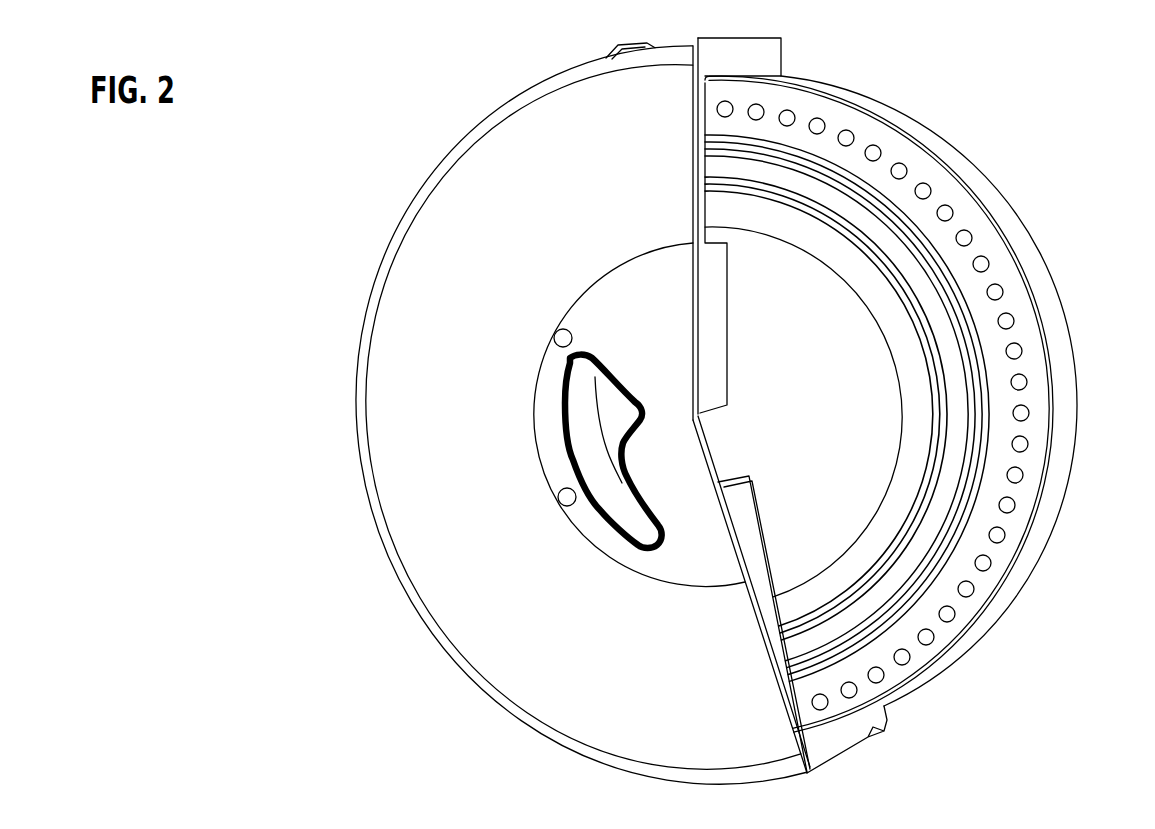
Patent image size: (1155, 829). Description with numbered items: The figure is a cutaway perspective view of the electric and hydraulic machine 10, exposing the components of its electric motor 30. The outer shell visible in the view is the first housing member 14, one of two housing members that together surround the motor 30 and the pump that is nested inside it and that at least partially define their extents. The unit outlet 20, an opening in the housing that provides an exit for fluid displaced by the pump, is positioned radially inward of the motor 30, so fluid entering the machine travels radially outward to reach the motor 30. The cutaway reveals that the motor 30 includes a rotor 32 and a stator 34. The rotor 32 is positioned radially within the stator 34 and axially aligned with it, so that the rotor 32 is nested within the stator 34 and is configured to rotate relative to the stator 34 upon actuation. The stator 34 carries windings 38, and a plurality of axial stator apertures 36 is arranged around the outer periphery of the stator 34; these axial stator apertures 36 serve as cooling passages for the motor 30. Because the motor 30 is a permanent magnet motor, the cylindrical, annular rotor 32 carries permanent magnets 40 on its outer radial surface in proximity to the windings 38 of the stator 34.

The electric and hydraulic machine 10 is at (184, 325).
The first housing member 14 is at (410, 290).
The unit outlet 20 is at (570, 418).
The motor 30 is at (1037, 262).
The rotor 32 is at (860, 528).
The stator 34 is at (972, 202).
The axial stator apertures 36 is at (1032, 378).
The windings 38 is at (880, 237).
The permanent magnets 40 is at (940, 440).